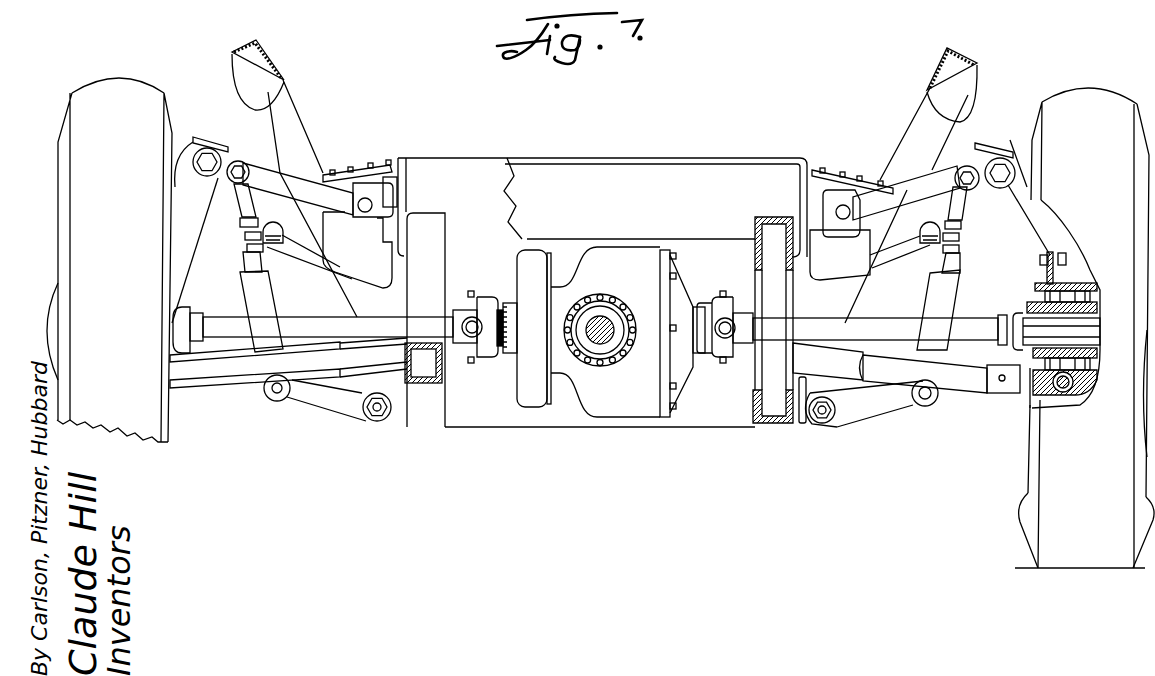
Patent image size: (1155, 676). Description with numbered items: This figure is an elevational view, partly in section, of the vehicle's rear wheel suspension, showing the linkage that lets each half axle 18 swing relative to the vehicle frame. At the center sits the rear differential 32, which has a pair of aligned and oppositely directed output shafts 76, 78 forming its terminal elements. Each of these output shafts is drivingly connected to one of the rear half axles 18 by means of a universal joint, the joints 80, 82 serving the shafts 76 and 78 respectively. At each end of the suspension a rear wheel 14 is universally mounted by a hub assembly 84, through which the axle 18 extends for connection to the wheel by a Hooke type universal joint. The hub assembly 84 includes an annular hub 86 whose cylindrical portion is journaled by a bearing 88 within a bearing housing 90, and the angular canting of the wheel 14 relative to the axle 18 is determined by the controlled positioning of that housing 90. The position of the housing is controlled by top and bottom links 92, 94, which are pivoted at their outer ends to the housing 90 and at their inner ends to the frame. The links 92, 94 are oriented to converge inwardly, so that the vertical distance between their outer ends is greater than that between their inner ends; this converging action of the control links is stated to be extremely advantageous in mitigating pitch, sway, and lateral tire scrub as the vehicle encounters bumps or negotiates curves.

The rear wheel 14 is at (172, 84).
The half axle 18 is at (300, 320).
The rear differential 32 is at (622, 425).
The output shaft 76 is at (503, 303).
The output shaft 78 is at (693, 303).
The universal joint 80 is at (462, 297).
The universal joint 82 is at (752, 302).
The hub assembly 84 is at (1079, 273).
The annular hub 86 is at (1085, 352).
The bearing 88 is at (1090, 303).
The bearing housing 90 is at (1080, 285).
The top link 92 is at (262, 165).
The bottom link 94 is at (218, 377).